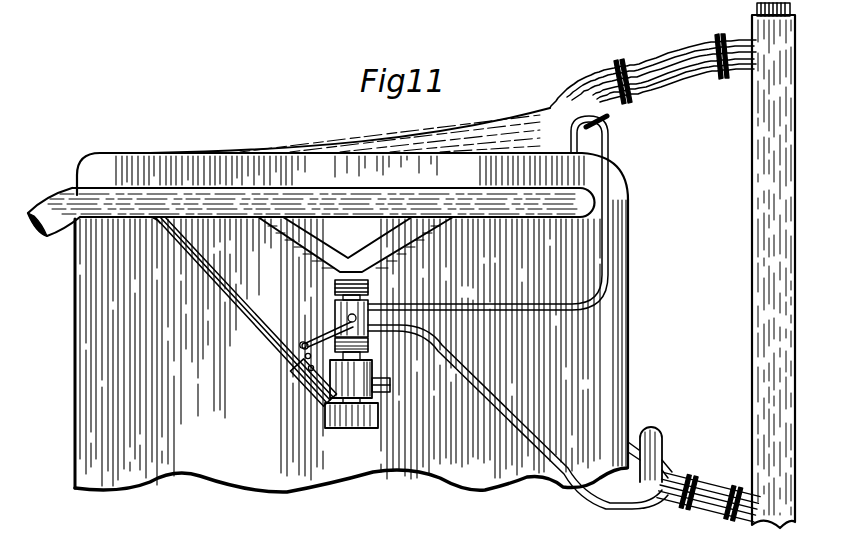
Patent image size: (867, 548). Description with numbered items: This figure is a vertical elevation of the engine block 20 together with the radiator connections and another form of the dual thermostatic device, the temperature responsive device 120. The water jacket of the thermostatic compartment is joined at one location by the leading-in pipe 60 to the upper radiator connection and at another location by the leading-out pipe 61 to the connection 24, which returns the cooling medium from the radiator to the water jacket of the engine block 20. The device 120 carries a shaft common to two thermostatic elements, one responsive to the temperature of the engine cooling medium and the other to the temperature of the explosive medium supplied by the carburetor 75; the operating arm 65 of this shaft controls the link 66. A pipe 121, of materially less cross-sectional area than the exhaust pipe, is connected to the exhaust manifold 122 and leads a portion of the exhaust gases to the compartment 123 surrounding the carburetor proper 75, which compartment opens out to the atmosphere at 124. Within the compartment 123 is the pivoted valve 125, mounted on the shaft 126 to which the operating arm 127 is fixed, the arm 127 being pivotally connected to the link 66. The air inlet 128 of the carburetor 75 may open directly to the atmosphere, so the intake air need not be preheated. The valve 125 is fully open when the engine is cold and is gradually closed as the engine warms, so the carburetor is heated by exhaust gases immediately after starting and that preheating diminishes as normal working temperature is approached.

The engine block 20 is at (628, 306).
The connection 24 is at (661, 72).
The leading-in pipe 60 is at (609, 140).
The leading-out pipe 61 is at (611, 508).
The operating arm 65 is at (367, 305).
The link 66 is at (322, 336).
The carburetor 75 is at (380, 350).
The temperature responsive device 120 is at (370, 292).
The pipe 121 is at (228, 284).
The exhaust manifold 122 is at (226, 206).
The compartment 123 is at (305, 380).
The atmospheric opening 124 is at (386, 392).
The pivoted valve 125 is at (307, 369).
The shaft 126 is at (304, 356).
The operating arm 127 is at (299, 342).
The air inlet 128 is at (378, 425).